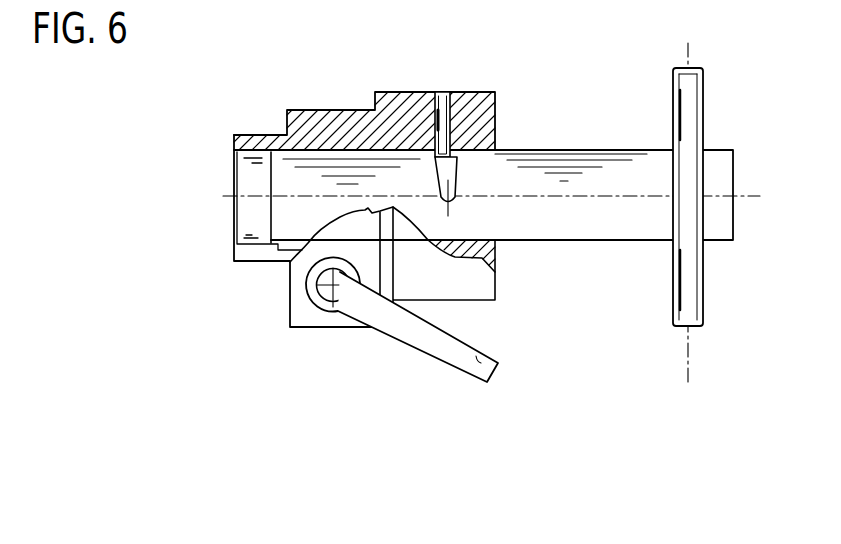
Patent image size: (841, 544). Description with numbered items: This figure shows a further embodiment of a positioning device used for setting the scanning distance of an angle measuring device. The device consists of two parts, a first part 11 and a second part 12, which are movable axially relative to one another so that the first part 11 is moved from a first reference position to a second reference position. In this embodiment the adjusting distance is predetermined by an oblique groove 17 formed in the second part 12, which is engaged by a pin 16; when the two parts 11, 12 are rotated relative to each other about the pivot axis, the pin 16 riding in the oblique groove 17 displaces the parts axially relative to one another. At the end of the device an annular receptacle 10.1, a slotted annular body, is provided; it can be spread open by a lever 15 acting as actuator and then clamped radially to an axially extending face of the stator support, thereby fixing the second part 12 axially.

The annular receptacle 10.1 is at (253, 256).
The first part 11 is at (585, 220).
The second part 12 is at (325, 109).
The actuator lever 15 is at (490, 352).
The pin 16 is at (448, 177).
The oblique groove 17 is at (446, 92).